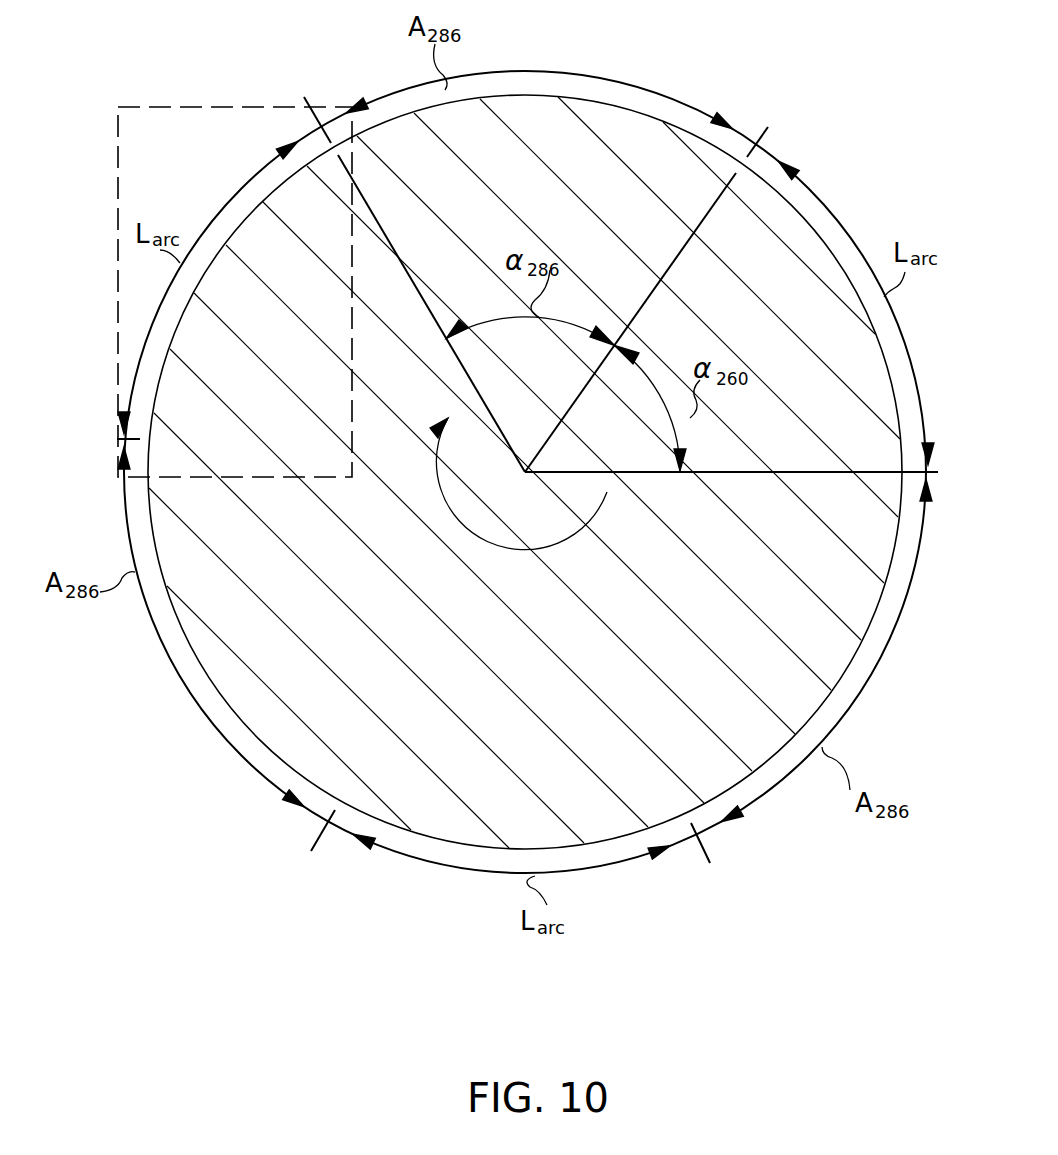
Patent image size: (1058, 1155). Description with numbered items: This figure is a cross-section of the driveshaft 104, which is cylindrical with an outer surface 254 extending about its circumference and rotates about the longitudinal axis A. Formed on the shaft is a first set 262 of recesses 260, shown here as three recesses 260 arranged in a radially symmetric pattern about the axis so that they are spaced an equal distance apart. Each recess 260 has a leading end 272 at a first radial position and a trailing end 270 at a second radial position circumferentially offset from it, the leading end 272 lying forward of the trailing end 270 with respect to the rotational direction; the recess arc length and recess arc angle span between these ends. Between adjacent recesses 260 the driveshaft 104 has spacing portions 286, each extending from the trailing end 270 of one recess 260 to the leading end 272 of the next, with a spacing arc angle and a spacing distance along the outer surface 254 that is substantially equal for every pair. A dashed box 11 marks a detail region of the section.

The detail region (dashed box) 11 is at (230, 106).
The driveshaft 104 is at (640, 160).
The outer surface 254 is at (176, 618).
The recess 260 is at (230, 233).
The first set of recesses 262 is at (255, 198).
The trailing end 270 is at (147, 446).
The leading end 272 is at (353, 140).
The spacing portion 286 is at (202, 673).